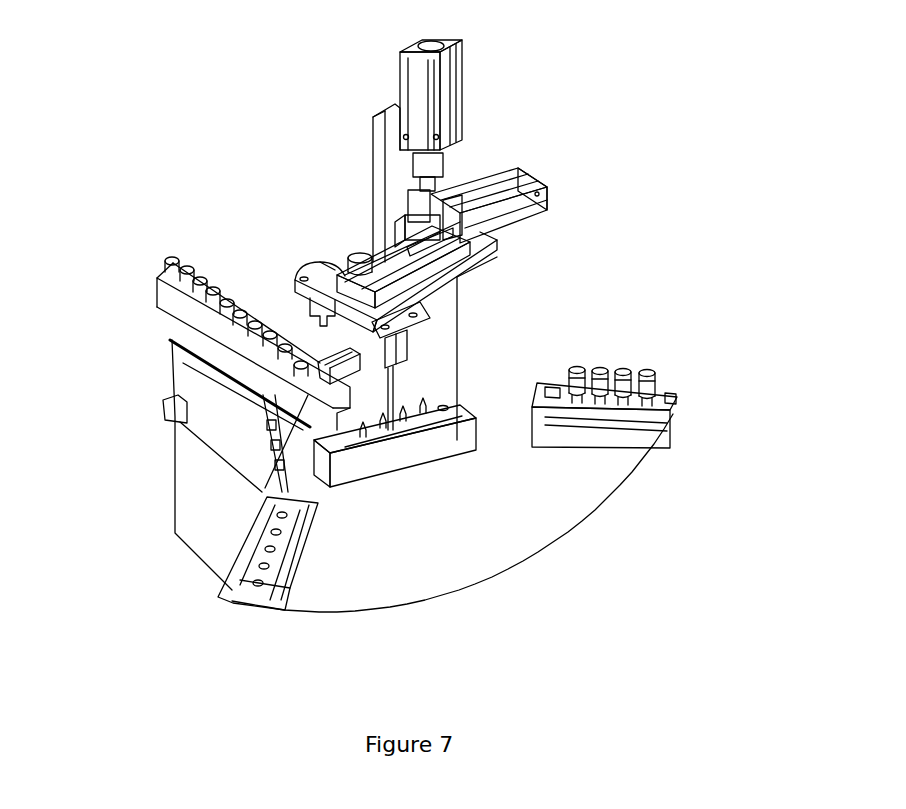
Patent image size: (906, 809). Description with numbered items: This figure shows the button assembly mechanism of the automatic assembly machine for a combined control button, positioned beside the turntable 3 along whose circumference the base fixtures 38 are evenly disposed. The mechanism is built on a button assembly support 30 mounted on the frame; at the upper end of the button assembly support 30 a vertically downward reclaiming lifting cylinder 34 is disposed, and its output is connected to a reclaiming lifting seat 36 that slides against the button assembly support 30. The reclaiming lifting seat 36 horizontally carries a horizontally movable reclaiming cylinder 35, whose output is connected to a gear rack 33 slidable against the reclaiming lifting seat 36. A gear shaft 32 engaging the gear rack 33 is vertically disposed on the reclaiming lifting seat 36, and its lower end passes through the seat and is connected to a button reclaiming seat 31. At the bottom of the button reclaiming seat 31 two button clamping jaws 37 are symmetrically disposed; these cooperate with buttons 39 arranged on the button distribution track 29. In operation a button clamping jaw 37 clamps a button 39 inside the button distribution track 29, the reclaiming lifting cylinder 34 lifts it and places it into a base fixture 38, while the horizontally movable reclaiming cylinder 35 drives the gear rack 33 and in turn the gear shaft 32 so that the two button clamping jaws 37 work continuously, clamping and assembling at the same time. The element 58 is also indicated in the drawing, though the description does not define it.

The turntable 3 is at (457, 517).
The button distribution track 29 is at (233, 355).
The button assembly support 30 is at (333, 330).
The button reclaiming seat 31 is at (312, 277).
The gear shaft 32 is at (352, 265).
The gear rack 33 is at (403, 260).
The reclaiming lifting cylinder 34 is at (460, 98).
The horizontally movable reclaiming cylinder 35 is at (508, 215).
The reclaiming lifting seat 36 is at (453, 273).
The button clamping jaw 37 is at (477, 455).
The base fixture 38 is at (395, 465).
The button 39 is at (273, 362).
The gripper 58 is at (437, 334).